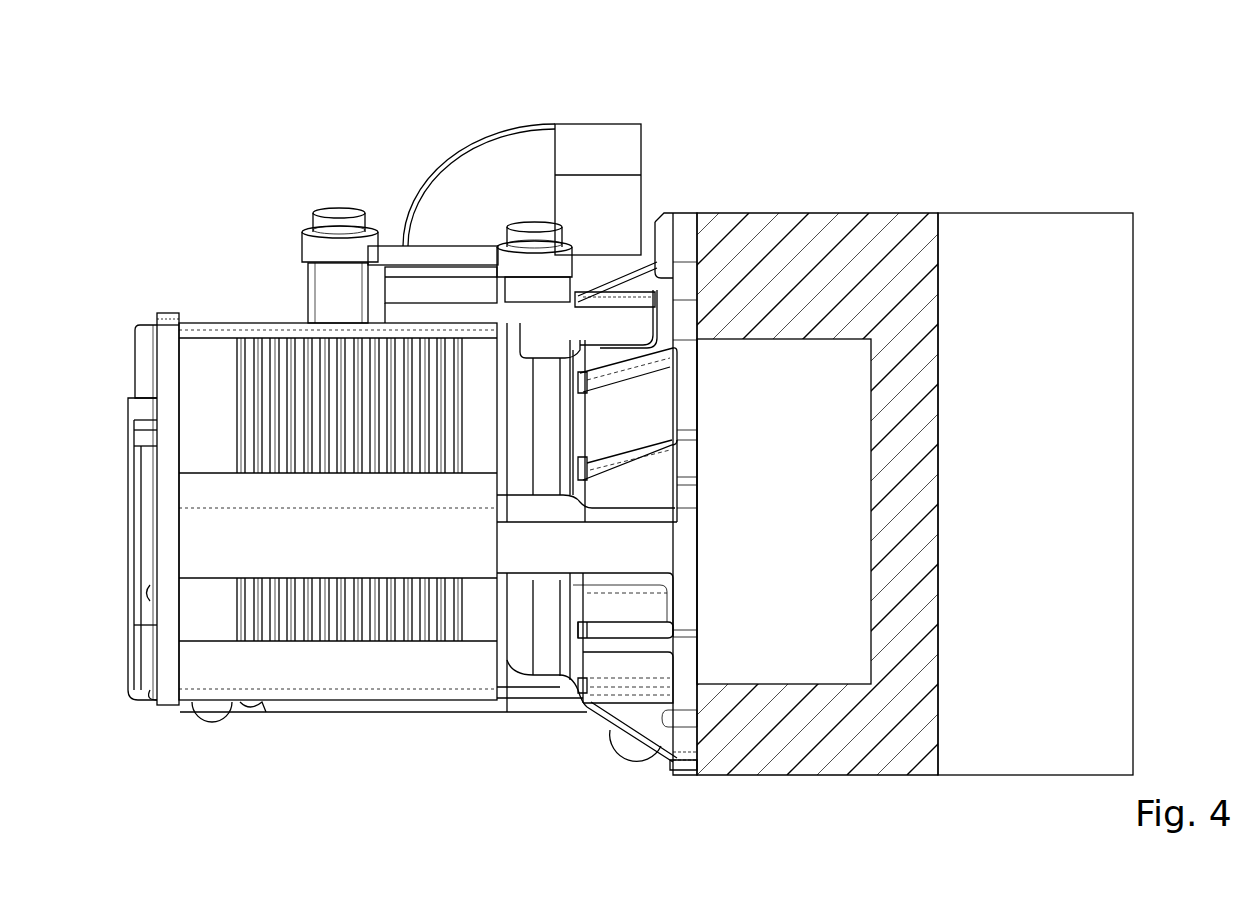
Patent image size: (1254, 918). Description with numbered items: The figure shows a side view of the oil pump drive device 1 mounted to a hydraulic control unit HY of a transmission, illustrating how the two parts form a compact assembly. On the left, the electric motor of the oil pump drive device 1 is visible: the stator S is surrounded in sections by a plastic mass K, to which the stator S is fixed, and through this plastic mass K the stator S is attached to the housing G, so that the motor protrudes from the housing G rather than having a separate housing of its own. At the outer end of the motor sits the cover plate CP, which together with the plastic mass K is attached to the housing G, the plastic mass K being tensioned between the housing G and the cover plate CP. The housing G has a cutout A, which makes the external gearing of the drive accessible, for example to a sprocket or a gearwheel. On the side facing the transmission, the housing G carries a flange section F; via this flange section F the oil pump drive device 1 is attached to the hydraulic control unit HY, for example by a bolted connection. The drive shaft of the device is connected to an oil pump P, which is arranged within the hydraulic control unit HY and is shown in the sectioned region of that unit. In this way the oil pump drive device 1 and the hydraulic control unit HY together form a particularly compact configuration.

The oil pump drive device 1 is at (397, 161).
The cover plate CP is at (167, 363).
The plastic mass K is at (203, 383).
The cutout A is at (615, 287).
The flange section F is at (662, 233).
The oil pump P is at (760, 432).
The hydraulic control unit HY is at (1013, 213).
The stator S is at (350, 608).
The housing G is at (542, 640).